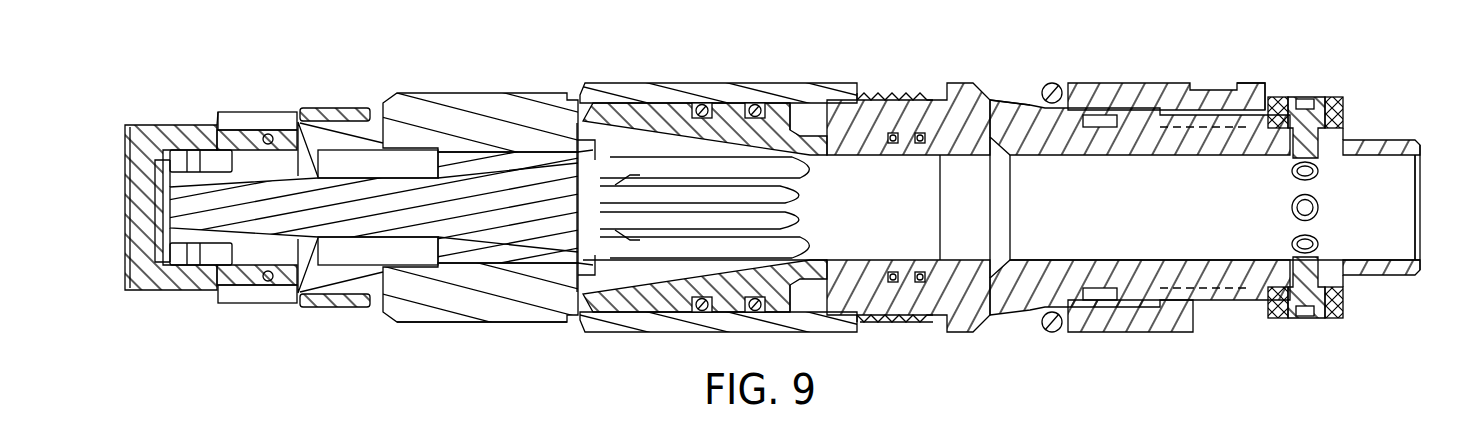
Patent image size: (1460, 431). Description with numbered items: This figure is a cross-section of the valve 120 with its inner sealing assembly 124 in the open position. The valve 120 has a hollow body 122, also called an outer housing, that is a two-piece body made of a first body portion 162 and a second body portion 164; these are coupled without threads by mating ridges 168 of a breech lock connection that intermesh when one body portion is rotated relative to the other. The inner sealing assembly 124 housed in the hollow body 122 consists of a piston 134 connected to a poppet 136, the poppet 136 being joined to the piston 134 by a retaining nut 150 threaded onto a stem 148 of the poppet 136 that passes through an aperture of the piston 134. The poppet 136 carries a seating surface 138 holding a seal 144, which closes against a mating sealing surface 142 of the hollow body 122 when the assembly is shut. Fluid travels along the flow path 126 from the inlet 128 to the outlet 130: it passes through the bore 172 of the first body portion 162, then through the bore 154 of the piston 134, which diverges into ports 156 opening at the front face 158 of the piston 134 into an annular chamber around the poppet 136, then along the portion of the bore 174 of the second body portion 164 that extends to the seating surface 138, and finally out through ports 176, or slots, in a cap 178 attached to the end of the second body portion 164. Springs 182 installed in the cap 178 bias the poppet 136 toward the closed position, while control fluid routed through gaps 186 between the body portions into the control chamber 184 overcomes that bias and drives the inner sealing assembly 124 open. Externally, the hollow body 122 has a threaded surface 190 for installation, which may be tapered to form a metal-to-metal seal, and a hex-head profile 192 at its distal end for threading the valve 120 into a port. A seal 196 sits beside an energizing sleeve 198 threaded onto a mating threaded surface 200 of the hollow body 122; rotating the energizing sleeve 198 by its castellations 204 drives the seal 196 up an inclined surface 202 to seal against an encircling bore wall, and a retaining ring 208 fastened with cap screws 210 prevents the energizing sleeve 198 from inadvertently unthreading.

The valve 120 is at (403, 62).
The hollow body 122 is at (733, 77).
The inner sealing assembly 124 is at (799, 119).
The flow path 126 is at (932, 163).
The inlet 128 is at (1421, 244).
The outlet 130 is at (219, 118).
The piston 134 is at (667, 113).
The poppet 136 is at (477, 227).
The seating surface 138 is at (293, 143).
The mating sealing surface 142 is at (320, 152).
The seal 144 is at (267, 134).
The stem 148 is at (603, 212).
The retaining nut 150 is at (633, 243).
The bore 154 is at (858, 262).
The ports 156 is at (630, 140).
The front face 158 is at (580, 140).
The first body portion 162 is at (1043, 146).
The second body portion 164 is at (700, 98).
The mating ridges 168 is at (911, 91).
The bore 172 is at (1090, 262).
The bore 174 is at (490, 147).
The ports 176 is at (240, 120).
The cap 178 is at (123, 174).
The springs 182 is at (168, 254).
The control chamber 184 is at (839, 116).
The gaps 186 is at (898, 325).
The threaded surface 190 is at (512, 323).
The hex-head profile 192 is at (1387, 140).
The seal 196 is at (1054, 82).
The energizing sleeve 198 is at (1160, 83).
The mating threaded surface 200 is at (1200, 117).
The inclined surface 202 is at (1030, 102).
The castellations 204 is at (1250, 82).
The retaining ring 208 is at (1341, 107).
The cap screws 210 is at (1323, 113).